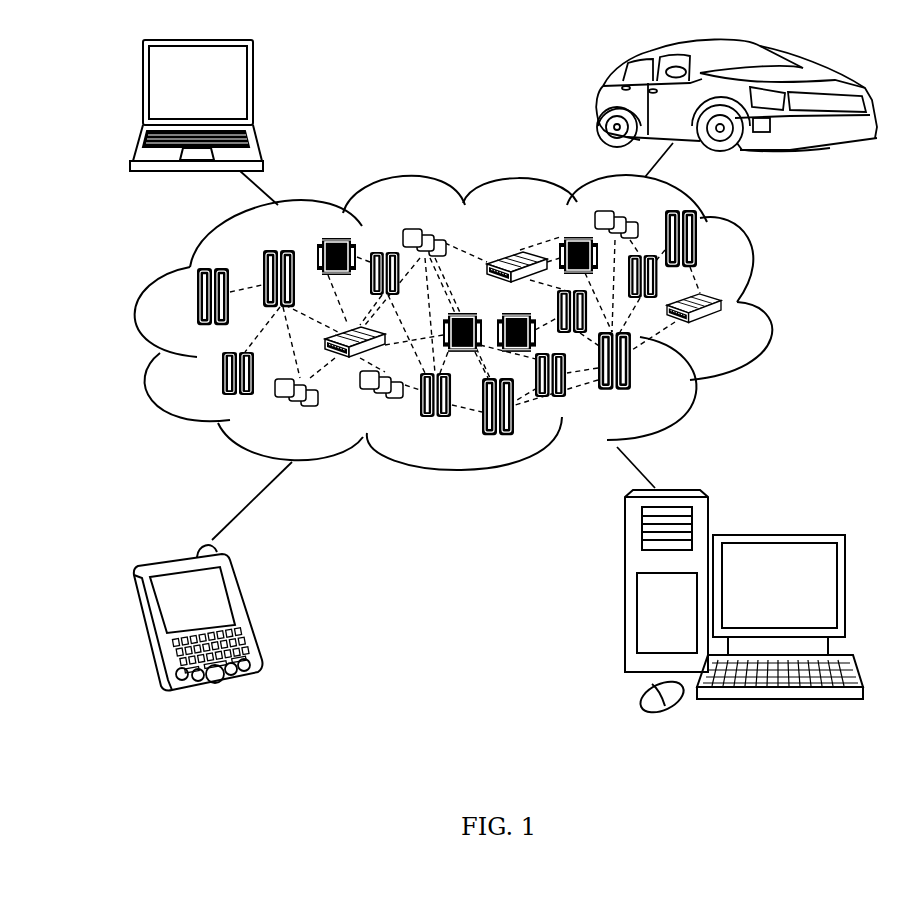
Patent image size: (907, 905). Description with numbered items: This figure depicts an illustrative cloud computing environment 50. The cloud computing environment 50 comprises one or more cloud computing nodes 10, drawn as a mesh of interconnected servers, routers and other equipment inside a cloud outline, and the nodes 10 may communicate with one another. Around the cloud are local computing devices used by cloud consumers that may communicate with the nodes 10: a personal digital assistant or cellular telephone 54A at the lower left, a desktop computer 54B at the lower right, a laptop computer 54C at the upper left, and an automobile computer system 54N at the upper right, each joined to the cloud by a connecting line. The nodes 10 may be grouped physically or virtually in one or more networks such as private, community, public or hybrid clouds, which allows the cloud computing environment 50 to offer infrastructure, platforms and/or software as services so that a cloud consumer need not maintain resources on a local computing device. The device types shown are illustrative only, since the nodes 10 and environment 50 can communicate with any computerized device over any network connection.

The cloud computing node 10 is at (738, 331).
The cloud computing environment 50 is at (777, 308).
The personal digital assistant or cellular telephone 54A is at (245, 610).
The desktop computer 54B is at (777, 533).
The laptop computer 54C is at (254, 88).
The automobile computer system 54N is at (602, 98).